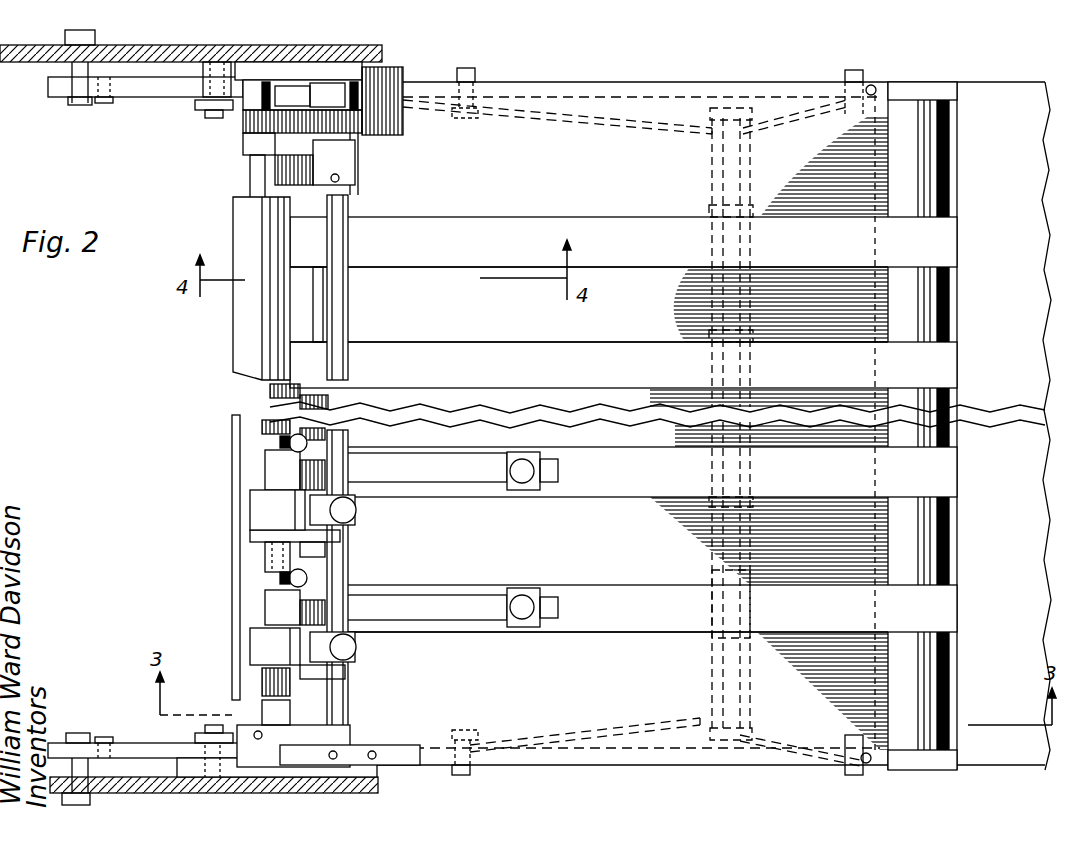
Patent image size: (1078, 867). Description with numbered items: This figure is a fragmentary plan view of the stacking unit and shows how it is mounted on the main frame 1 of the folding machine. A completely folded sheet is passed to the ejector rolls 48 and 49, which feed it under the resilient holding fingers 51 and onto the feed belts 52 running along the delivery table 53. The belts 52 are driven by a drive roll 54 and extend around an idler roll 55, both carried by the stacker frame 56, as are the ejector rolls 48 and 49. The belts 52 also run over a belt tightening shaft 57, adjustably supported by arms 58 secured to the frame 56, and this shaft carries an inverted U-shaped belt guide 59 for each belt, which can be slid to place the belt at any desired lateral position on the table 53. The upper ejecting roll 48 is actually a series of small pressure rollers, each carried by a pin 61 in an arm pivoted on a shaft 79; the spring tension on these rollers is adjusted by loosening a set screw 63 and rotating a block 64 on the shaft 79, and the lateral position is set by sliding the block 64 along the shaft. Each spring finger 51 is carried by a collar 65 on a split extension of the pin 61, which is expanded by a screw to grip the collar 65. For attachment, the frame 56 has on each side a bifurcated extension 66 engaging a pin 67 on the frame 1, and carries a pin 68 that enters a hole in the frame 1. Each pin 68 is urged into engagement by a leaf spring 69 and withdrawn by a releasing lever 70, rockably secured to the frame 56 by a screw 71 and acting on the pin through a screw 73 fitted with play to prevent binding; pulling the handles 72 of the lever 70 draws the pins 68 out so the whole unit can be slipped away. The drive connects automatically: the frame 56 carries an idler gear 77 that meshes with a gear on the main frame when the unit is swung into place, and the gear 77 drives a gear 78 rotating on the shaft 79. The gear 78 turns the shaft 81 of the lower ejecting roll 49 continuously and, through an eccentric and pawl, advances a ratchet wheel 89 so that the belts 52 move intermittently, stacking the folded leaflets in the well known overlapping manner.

The main frame 1 is at (390, 800).
The upper ejecting roll 48 is at (258, 512).
The lower ejecting roll 49 is at (245, 352).
The resilient holding fingers 51 is at (470, 472).
The feed belts 52 is at (622, 268).
The delivery table 53 is at (589, 467).
The drive roll 54 is at (300, 402).
The idler roll 55 is at (957, 318).
The stacker frame 56 is at (533, 80).
The belt tightening shaft 57 is at (714, 692).
The arms 58 is at (770, 118).
The inverted U-shaped belt guide 59 is at (715, 505).
The pin 61 is at (280, 568).
The set screw 63 is at (357, 510).
The block 64 is at (352, 525).
The collar 65 is at (268, 462).
The bifurcated extension 66 is at (55, 88).
The pin 67 is at (75, 106).
The pin 68 is at (229, 70).
The leaf spring 69 is at (130, 98).
The releasing lever 70 is at (210, 108).
The screw 71 is at (463, 118).
The handles 72 is at (683, 133).
The screw 73 is at (212, 116).
The idler gear 77 is at (245, 135).
The gear 78 is at (365, 140).
The shaft 79 is at (348, 214).
The shaft 81 is at (255, 187).
The ratchet wheel 89 is at (278, 170).